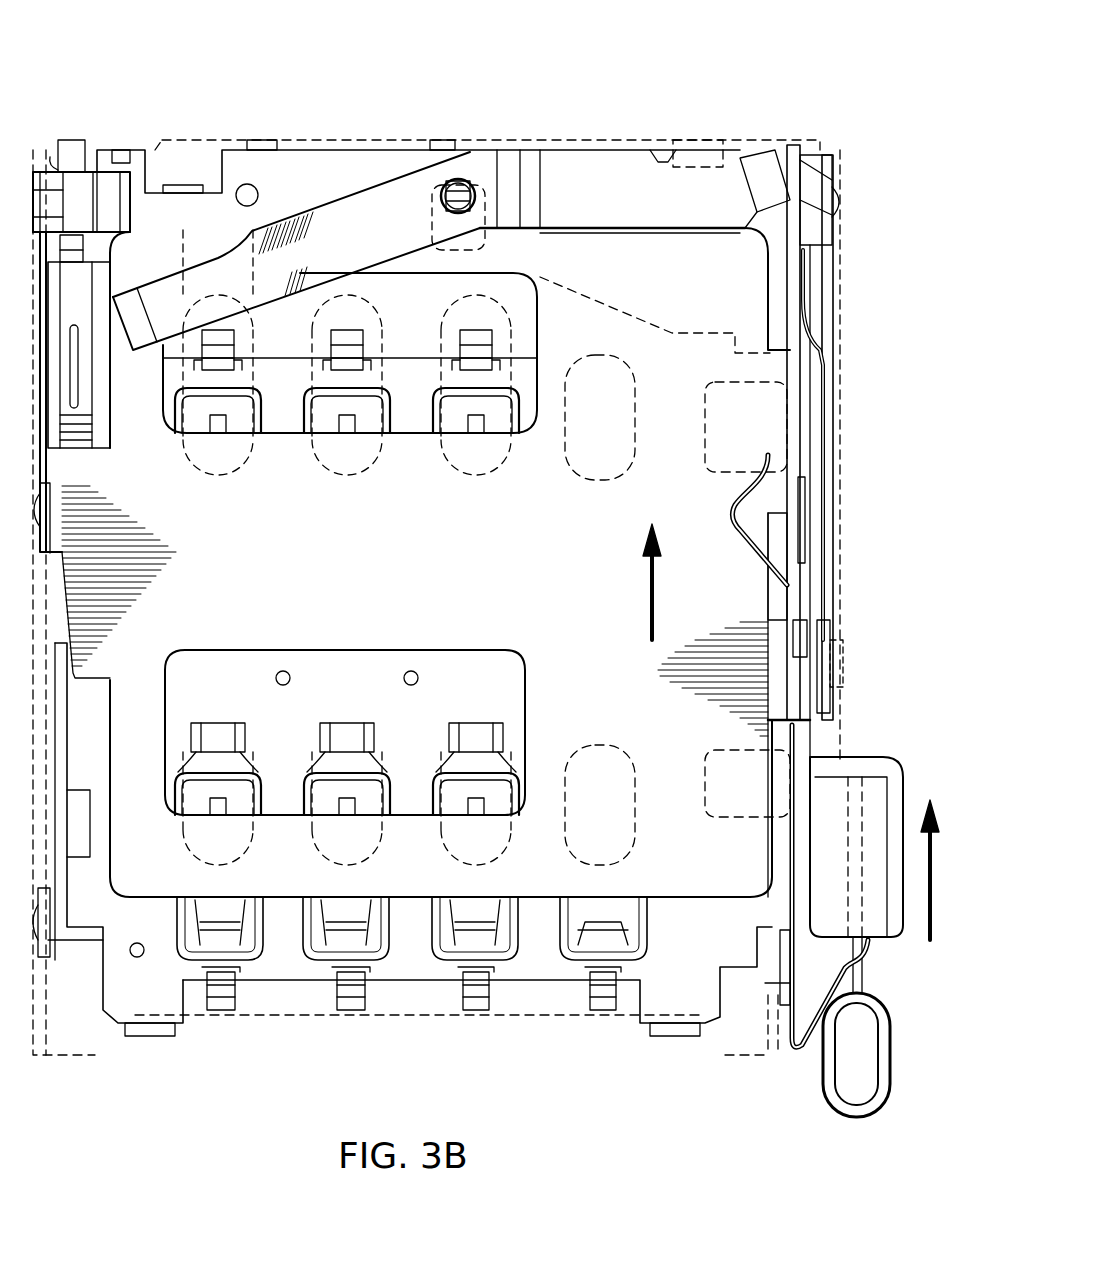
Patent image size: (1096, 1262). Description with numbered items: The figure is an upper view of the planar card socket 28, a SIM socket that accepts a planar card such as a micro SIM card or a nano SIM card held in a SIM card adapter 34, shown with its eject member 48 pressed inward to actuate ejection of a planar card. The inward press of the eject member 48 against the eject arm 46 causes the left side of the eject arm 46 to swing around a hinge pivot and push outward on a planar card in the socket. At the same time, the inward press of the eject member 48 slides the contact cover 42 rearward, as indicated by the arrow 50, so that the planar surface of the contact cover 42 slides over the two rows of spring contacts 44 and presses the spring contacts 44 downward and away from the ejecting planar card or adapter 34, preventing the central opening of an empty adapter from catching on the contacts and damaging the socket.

The planar card socket 28 is at (700, 76).
The SIM card adapter 34 is at (675, 900).
The contact cover 42 is at (418, 262).
The spring contacts 44 is at (218, 428).
The eject arm 46 is at (571, 170).
The eject member 48 is at (892, 1052).
The arrow 50 is at (658, 596).